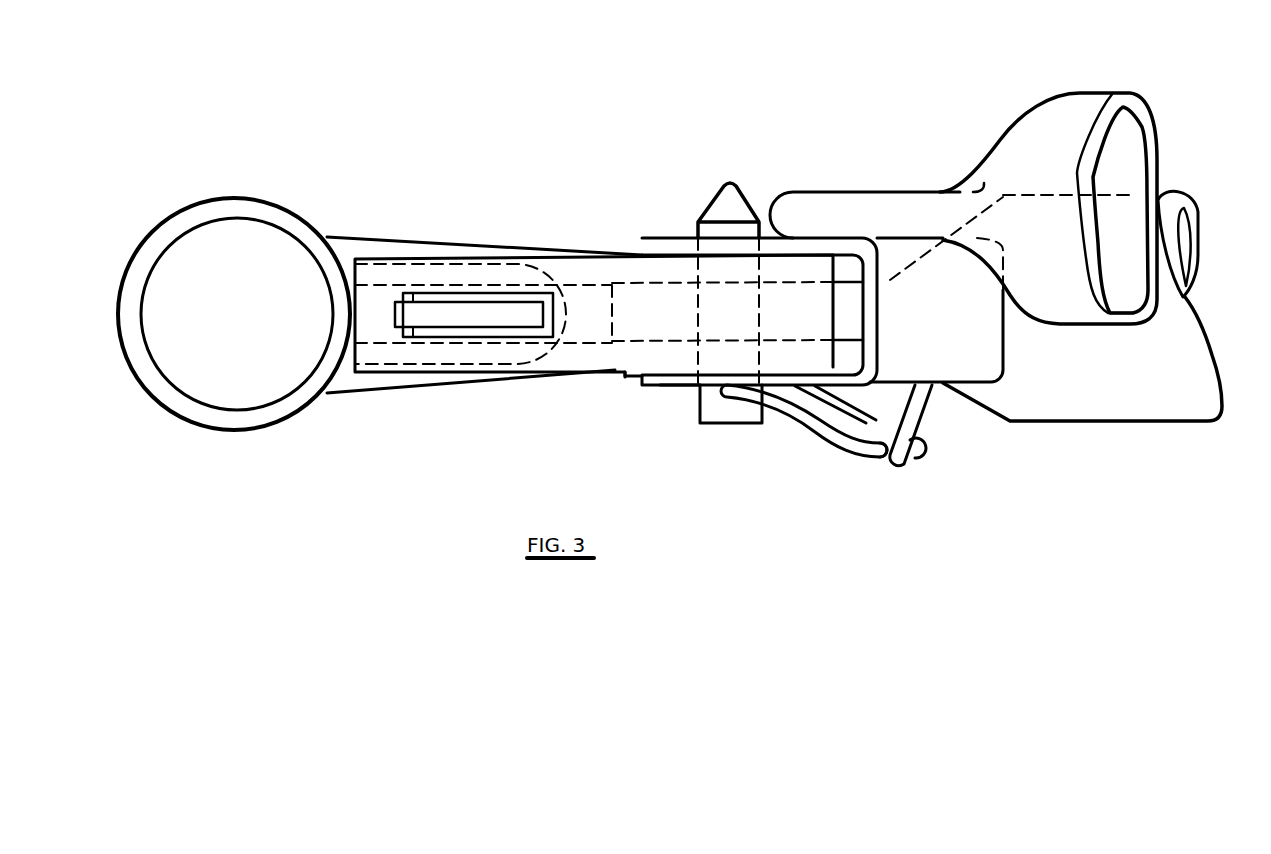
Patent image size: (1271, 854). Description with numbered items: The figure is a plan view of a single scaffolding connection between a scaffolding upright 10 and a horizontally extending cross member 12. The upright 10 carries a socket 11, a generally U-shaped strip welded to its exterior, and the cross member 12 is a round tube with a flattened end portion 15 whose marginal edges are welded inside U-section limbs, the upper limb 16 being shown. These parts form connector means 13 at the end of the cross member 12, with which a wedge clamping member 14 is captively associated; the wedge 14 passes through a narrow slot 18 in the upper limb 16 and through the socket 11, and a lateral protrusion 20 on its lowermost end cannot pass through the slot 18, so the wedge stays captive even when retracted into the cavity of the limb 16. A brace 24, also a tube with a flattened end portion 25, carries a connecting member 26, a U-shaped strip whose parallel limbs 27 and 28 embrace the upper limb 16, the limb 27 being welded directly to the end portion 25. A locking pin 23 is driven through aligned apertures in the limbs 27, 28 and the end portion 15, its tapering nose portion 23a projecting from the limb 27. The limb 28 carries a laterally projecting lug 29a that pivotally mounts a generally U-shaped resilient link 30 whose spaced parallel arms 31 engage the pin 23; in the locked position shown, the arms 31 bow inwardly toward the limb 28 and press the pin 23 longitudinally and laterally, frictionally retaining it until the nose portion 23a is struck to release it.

The scaffolding upright 10 is at (256, 178).
The socket 11 is at (430, 244).
The cross member 12 is at (1053, 438).
The connector means 13 is at (594, 388).
The wedge clamping member 14 is at (500, 312).
The flattened end portion 15 is at (636, 297).
The upper limb 16 is at (627, 379).
The narrow slot 18 is at (440, 336).
The lateral protrusion 20 is at (500, 334).
The locking pin 23 is at (734, 427).
The tapering nose portion 23a is at (780, 167).
The brace 24 is at (1039, 80).
The flattened end portion 25 is at (923, 211).
The connecting member 26 is at (962, 336).
The limb 27 is at (680, 247).
The limb 28 is at (677, 381).
The lug 29a is at (912, 454).
The resilient link 30 is at (857, 460).
The arms 31 is at (822, 417).